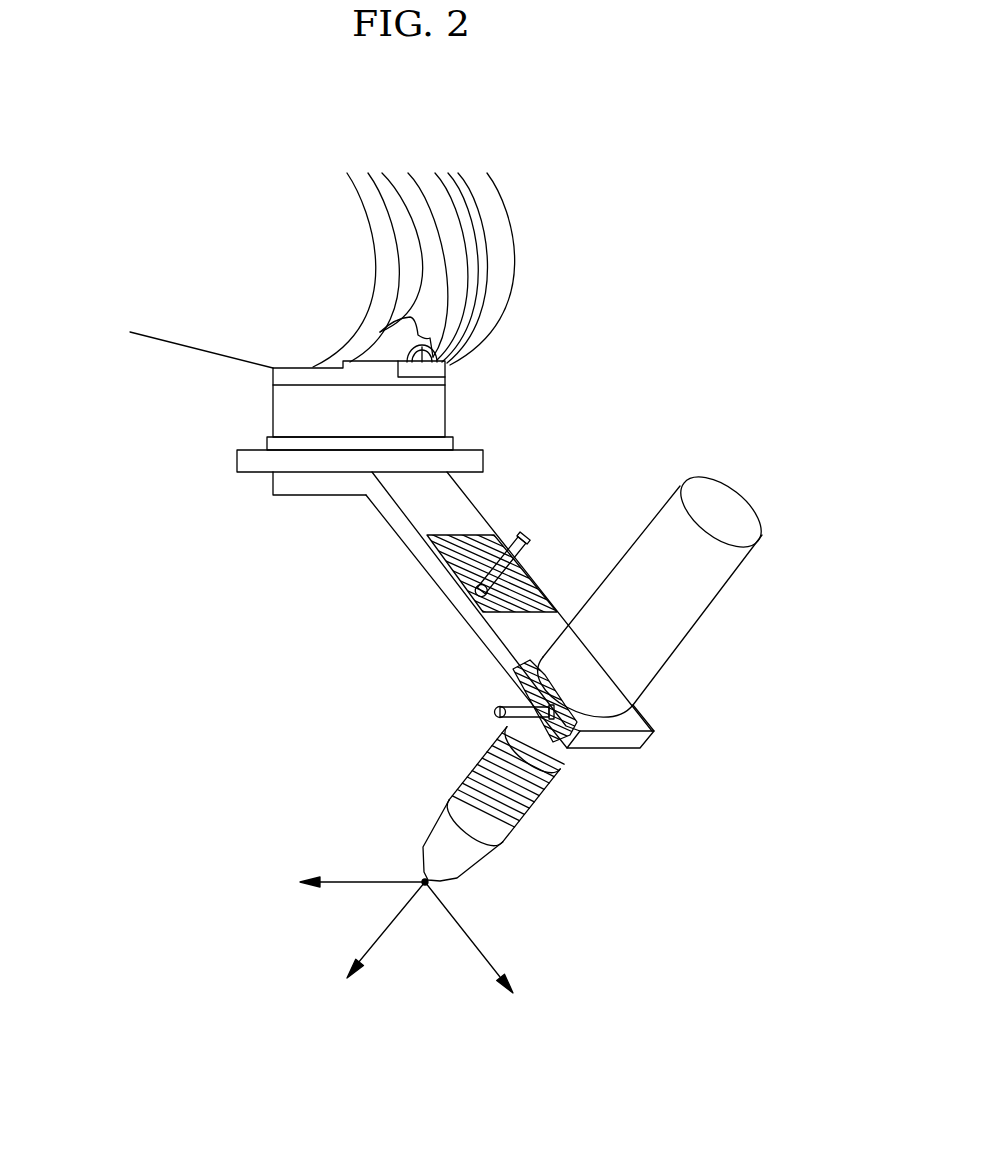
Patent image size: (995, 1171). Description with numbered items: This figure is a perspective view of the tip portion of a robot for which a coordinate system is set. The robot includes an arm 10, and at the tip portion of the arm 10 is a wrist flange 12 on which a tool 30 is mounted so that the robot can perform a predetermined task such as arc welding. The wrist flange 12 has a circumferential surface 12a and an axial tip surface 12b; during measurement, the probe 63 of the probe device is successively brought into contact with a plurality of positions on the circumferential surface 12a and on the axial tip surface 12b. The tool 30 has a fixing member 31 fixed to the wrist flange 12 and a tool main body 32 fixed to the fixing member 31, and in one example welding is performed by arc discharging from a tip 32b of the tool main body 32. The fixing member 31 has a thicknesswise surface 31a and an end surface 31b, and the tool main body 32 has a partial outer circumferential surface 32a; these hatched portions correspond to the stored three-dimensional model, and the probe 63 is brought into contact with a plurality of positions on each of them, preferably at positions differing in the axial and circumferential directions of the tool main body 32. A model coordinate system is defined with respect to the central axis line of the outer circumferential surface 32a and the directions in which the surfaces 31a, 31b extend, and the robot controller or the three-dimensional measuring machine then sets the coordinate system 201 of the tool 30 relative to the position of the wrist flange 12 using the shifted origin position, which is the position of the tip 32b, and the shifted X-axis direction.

The arm 10 is at (200, 295).
The wrist flange 12 is at (273, 405).
The circumferential surface 12a is at (487, 461).
The axial tip surface 12b is at (256, 473).
The tool 30 is at (688, 458).
The fixing member 31 is at (475, 610).
The thicknesswise surface 31a is at (523, 597).
The end surface 31b is at (507, 673).
The tool main body 32 is at (540, 806).
The outer circumferential surface 32a is at (450, 786).
The tip 32b is at (422, 880).
The probe 63 is at (522, 536).
The coordinate system 201 is at (380, 937).